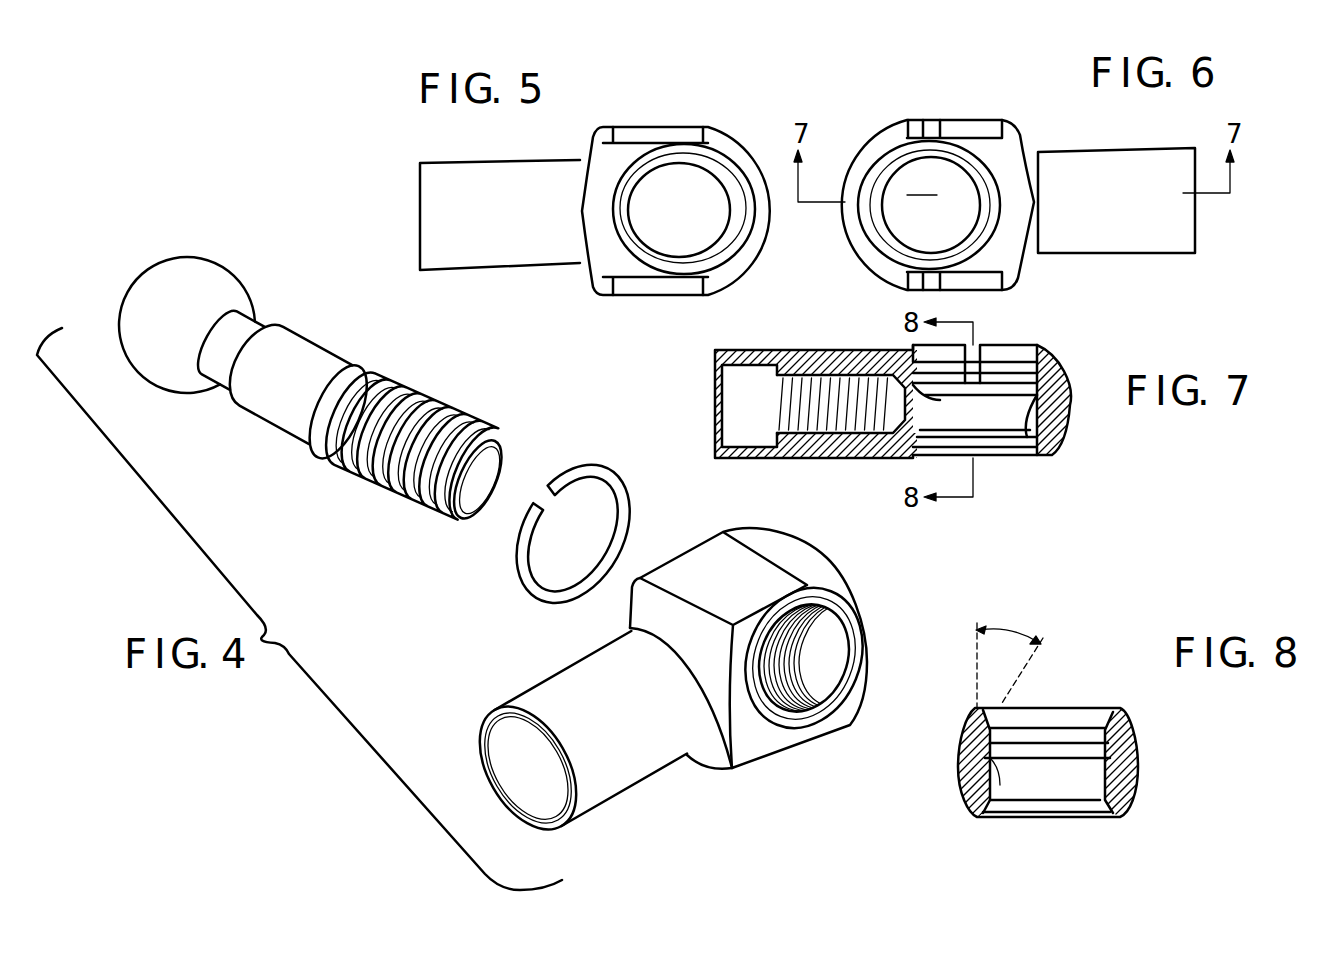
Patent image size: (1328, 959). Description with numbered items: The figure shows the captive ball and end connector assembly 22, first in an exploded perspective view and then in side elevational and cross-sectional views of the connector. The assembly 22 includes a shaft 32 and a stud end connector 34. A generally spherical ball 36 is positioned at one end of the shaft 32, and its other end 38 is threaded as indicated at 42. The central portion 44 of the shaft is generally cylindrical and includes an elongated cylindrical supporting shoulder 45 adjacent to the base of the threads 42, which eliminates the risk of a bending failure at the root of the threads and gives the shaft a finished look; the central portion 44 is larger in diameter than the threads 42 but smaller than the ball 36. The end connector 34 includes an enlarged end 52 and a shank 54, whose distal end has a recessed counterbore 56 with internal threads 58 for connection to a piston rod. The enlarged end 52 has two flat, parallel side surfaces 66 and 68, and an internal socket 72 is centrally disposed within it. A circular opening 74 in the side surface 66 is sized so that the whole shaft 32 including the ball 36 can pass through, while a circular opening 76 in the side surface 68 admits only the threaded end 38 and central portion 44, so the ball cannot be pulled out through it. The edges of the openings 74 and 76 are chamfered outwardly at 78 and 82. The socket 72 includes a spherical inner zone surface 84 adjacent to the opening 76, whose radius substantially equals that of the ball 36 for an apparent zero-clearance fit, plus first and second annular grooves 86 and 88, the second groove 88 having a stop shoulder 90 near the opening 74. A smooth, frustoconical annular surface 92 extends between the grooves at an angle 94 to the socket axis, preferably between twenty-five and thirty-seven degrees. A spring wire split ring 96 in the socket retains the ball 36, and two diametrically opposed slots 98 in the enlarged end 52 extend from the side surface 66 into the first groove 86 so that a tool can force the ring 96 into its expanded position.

In FIG. 4, the captive ball and end connector assembly 22 is at (382, 517).
In FIG. 4, the shaft 32 is at (289, 326).
In FIG. 4, the stud end connector 34 is at (669, 667).
In FIG. 5, the stud end connector 34 is at (561, 218).
In FIG. 6, the stud end connector 34 is at (1006, 209).
In FIG. 4, the ball 36 is at (186, 268).
In FIG. 4, the other end of shaft 38 is at (468, 527).
In FIG. 4, the threads 42 is at (456, 432).
In FIG. 4, the central portion of shaft 44 is at (229, 385).
In FIG. 4, the supporting shoulder 45 is at (351, 366).
In FIG. 4, the enlarged end 52 is at (831, 561).
In FIG. 5, the enlarged end 52 is at (730, 137).
In FIG. 6, the enlarged end 52 is at (873, 137).
In FIG. 8, the enlarged end 52 is at (1138, 758).
In FIG. 4, the shank 54 is at (632, 726).
In FIG. 5, the shank 54 is at (425, 183).
In FIG. 6, the shank 54 is at (1120, 193).
In FIG. 4, the recessed counterbore 56 is at (500, 767).
In FIG. 7, the recessed counterbore 56 is at (718, 377).
In FIG. 7, the internal threads 58 is at (785, 423).
In FIG. 6, the side surface 66 is at (1010, 173).
In FIG. 7, the side surface 66 is at (850, 355).
In FIG. 4, the side surface 68 is at (757, 748).
In FIG. 5, the side surface 68 is at (618, 157).
In FIG. 7, the side surface 68 is at (880, 458).
In FIG. 4, the internal socket 72 is at (820, 634).
In FIG. 5, the internal socket 72 is at (687, 201).
In FIG. 6, the internal socket 72 is at (929, 205).
In FIG. 7, the internal socket 72 is at (1003, 427).
In FIG. 8, the internal socket 72 is at (1047, 785).
In FIG. 7, the circular opening 74 is at (1038, 347).
In FIG. 8, the circular opening 74 is at (1095, 722).
In FIG. 8, the circular opening 76 is at (1003, 818).
In FIG. 6, the chamfer 78 is at (895, 262).
In FIG. 5, the chamfer 82 is at (673, 265).
In FIG. 8, the chamfer 82 is at (1105, 815).
In FIG. 4, the spherical inner zone surface 84 is at (798, 700).
In FIG. 7, the spherical inner zone surface 84 is at (1036, 413).
In FIG. 8, the spherical inner zone surface 84 is at (965, 797).
In FIG. 7, the first annular groove 86 is at (1018, 400).
In FIG. 8, the first annular groove 86 is at (1011, 777).
In FIG. 7, the second annular groove 88 is at (913, 362).
In FIG. 8, the second annular groove 88 is at (985, 740).
In FIG. 8, the stop shoulder 90 is at (1080, 735).
In FIG. 7, the annular surface 92 is at (975, 408).
In FIG. 8, the annular surface 92 is at (1047, 774).
In FIG. 8, the angle 94 is at (1009, 654).
In FIG. 4, the spring wire split ring 96 is at (534, 590).
In FIG. 4, the slots 98 is at (745, 562).
In FIG. 6, the slots 98 is at (935, 125).
In FIG. 7, the slots 98 is at (976, 352).
In FIG. 8, the slots 98 is at (1118, 718).